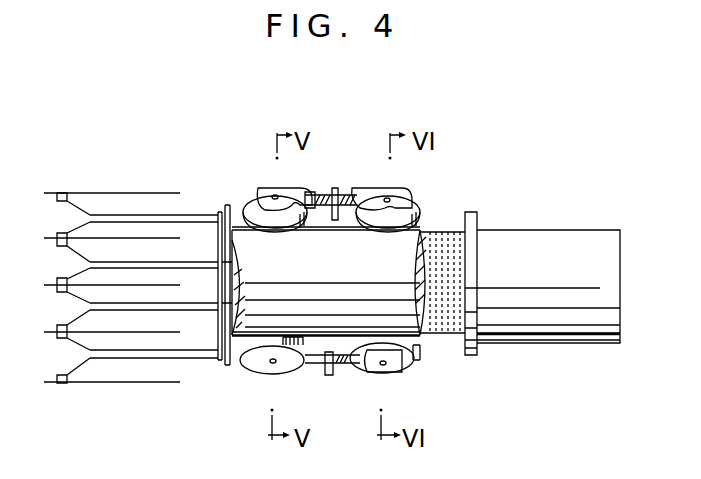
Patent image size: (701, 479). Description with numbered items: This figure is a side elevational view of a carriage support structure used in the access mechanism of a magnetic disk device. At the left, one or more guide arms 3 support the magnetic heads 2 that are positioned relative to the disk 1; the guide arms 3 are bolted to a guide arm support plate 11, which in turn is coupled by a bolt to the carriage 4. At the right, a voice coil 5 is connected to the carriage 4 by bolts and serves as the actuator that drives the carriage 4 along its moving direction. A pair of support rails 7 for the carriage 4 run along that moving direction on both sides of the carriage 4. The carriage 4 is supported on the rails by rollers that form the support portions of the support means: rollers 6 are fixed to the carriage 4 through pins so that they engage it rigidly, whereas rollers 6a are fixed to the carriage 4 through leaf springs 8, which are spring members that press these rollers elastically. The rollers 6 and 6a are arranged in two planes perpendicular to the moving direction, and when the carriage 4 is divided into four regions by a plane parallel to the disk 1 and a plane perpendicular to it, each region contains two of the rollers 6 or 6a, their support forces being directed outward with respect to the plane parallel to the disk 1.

The disk 1 is at (132, 195).
The magnetic heads 2 is at (67, 193).
The guide arms 3 is at (200, 210).
The carriage 4 is at (452, 217).
The voice coil 5 is at (572, 235).
The rollers 6 is at (248, 362).
The rollers 6a is at (258, 195).
The support rails 7 is at (238, 340).
The leaf springs 8 is at (326, 187).
The guide arm support plate 11 is at (228, 212).